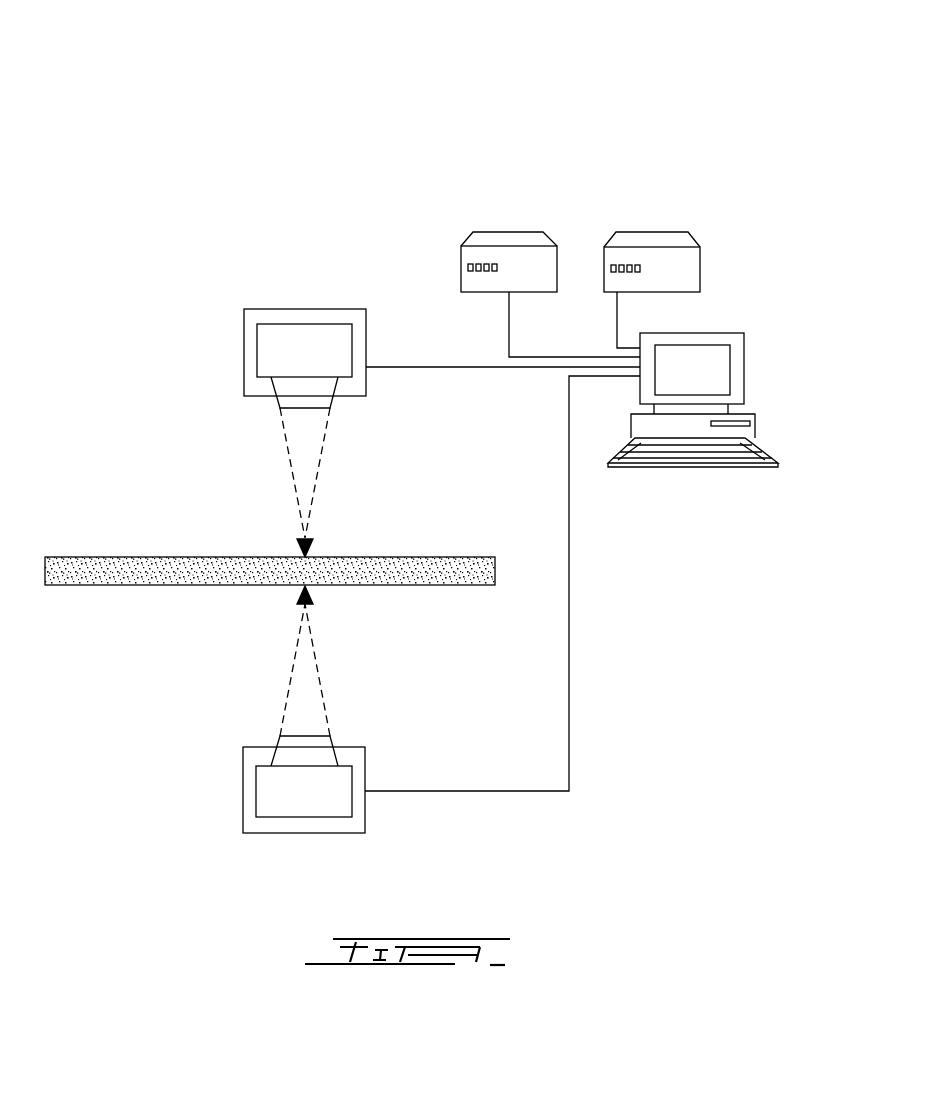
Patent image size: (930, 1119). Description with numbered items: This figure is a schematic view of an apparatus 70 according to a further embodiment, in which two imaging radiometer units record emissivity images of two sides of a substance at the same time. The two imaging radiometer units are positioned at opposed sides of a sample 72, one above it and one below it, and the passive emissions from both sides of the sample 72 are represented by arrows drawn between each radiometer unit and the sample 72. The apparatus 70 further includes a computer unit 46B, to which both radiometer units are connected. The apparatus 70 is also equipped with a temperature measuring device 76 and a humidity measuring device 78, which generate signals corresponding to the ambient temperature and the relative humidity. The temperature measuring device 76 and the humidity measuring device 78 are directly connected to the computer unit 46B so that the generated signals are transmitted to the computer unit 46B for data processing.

The apparatus 70 is at (218, 118).
The sample 72 is at (100, 557).
The temperature measuring device 76 is at (461, 262).
The humidity measuring device 78 is at (700, 264).
The computer unit 46B is at (744, 345).